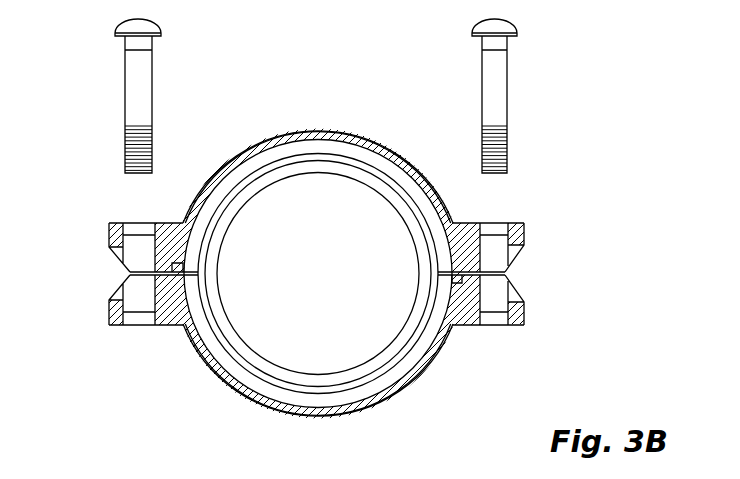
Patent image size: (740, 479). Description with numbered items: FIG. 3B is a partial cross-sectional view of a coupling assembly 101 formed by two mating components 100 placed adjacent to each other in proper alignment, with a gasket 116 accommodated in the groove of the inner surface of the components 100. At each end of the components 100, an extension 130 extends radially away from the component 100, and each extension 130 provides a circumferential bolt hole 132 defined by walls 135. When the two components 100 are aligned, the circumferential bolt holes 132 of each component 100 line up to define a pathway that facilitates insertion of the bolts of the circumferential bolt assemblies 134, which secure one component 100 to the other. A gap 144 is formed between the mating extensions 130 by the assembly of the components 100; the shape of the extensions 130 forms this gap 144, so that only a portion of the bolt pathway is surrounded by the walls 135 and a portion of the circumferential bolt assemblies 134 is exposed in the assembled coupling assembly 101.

The component 100 is at (258, 150).
The coupling assembly 101 is at (366, 80).
The gasket 116 is at (284, 175).
The extension 130 is at (524, 232).
The circumferential bolt hole 132 is at (137, 217).
The circumferential bolt assembly 134 is at (116, 27).
The wall 135 is at (480, 222).
The gap 144 is at (100, 247).